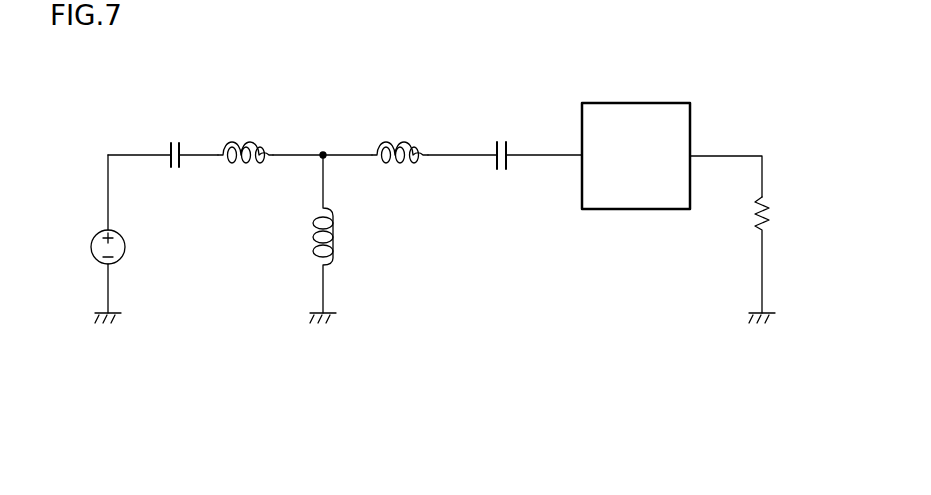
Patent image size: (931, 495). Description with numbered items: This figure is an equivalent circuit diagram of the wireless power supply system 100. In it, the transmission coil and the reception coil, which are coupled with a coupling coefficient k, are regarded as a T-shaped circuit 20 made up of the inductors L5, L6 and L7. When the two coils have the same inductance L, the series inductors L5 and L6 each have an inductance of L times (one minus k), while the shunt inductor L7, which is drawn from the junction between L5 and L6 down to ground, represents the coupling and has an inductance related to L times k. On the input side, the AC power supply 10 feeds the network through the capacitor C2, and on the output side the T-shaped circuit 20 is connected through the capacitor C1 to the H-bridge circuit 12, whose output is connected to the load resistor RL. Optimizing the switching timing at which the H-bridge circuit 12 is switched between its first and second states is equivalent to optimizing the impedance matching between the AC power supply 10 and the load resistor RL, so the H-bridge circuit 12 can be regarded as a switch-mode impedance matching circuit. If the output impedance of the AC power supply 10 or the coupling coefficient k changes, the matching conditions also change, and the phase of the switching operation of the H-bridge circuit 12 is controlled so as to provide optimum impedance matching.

The wireless power supply system 100 is at (476, 438).
The AC power supply 10 is at (125, 250).
The H-bridge circuit 12 is at (652, 103).
The T-shaped circuit 20 is at (435, 325).
The capacitor C1 is at (502, 140).
The capacitor C2 is at (175, 170).
The inductor L5 is at (232, 140).
The inductor L6 is at (392, 167).
The inductor L7 is at (336, 245).
The load resistor RL is at (771, 223).